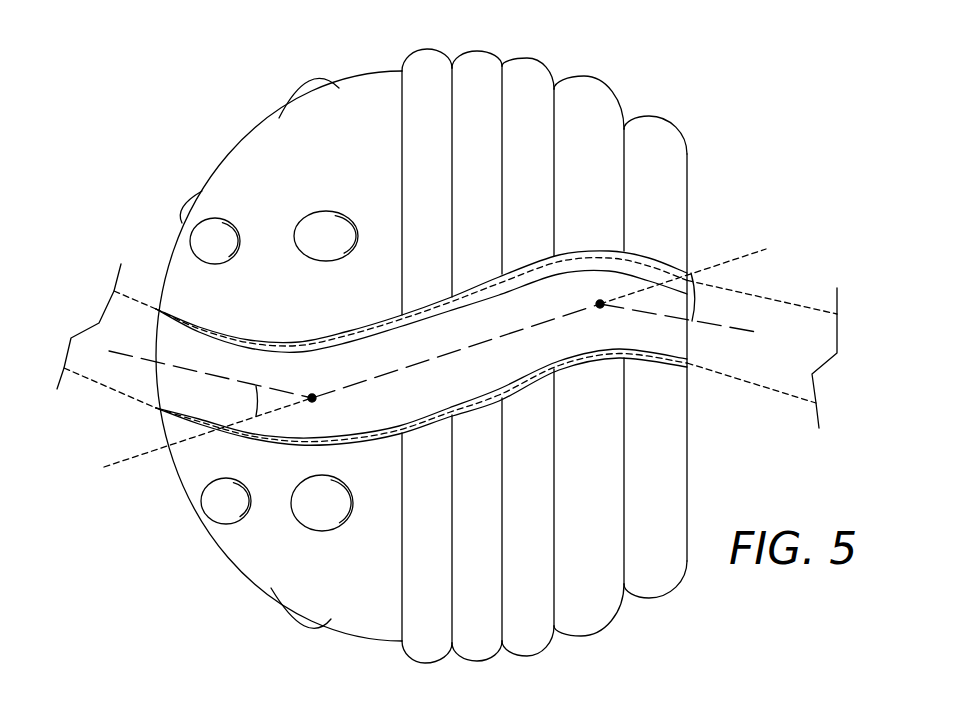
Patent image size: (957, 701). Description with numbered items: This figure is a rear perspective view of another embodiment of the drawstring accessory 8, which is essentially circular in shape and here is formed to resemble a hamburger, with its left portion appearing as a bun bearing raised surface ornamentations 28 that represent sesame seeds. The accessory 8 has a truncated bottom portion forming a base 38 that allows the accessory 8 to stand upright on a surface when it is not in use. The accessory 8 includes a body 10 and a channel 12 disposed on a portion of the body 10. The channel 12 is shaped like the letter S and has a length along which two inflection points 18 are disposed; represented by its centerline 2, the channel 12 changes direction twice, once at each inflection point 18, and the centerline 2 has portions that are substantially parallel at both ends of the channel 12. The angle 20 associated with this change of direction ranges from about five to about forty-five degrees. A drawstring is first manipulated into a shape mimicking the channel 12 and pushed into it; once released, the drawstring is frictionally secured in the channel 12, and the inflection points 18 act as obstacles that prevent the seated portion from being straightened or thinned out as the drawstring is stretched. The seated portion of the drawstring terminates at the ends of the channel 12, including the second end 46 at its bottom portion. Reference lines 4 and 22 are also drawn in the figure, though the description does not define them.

The drawstring accessory 8 is at (255, 116).
The body 10 is at (381, 84).
The centerline 2 is at (147, 358).
The section line 4 is at (774, 298).
The inflection point 18 is at (313, 397).
The angle 20 is at (257, 386).
The channels 22 is at (299, 347).
The surface ornamentations 28 is at (227, 510).
The base 38 is at (688, 452).
The second end 46 is at (690, 330).
The channel 12 is at (660, 347).